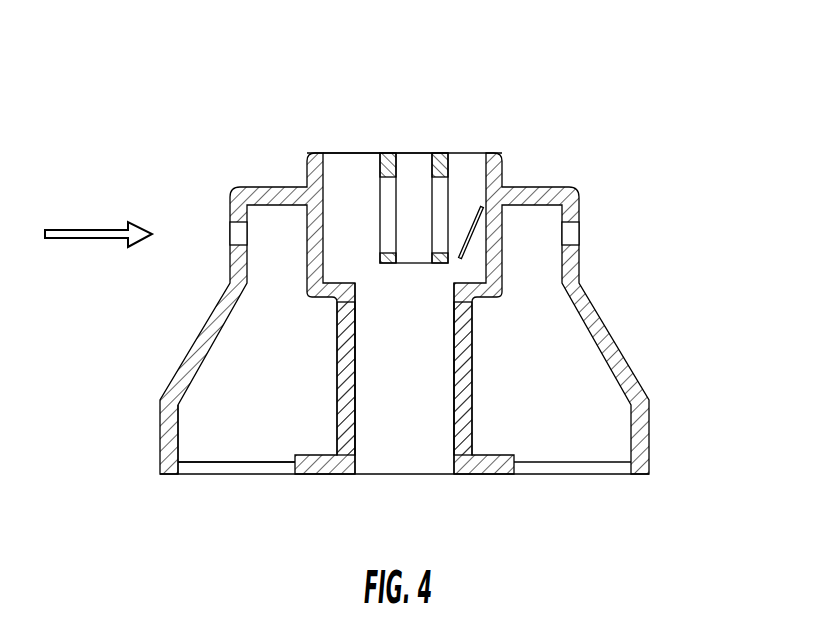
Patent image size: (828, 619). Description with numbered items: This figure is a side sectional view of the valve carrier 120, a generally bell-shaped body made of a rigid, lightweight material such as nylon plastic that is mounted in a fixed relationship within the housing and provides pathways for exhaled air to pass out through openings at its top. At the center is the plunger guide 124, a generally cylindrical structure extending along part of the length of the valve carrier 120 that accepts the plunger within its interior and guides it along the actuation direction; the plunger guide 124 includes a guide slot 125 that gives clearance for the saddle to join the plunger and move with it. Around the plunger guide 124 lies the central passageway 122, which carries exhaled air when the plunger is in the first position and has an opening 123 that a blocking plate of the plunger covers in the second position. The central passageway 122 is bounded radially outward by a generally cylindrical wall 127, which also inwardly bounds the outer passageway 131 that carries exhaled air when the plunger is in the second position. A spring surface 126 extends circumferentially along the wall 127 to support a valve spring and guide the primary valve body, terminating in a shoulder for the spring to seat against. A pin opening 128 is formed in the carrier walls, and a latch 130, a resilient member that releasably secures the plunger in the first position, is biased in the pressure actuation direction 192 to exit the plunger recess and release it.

The valve carrier 120 is at (611, 327).
The central passageway 122 is at (402, 425).
The opening 123 is at (432, 475).
The plunger guide 124 is at (411, 168).
The guide slot 125 is at (372, 206).
The spring surface 126 is at (473, 387).
The cylindrical wall 127 is at (357, 325).
The pin opening 128 is at (224, 237).
The latch 130 is at (474, 209).
The outer passageway 131 is at (255, 425).
The pressure actuation direction 192 is at (105, 228).